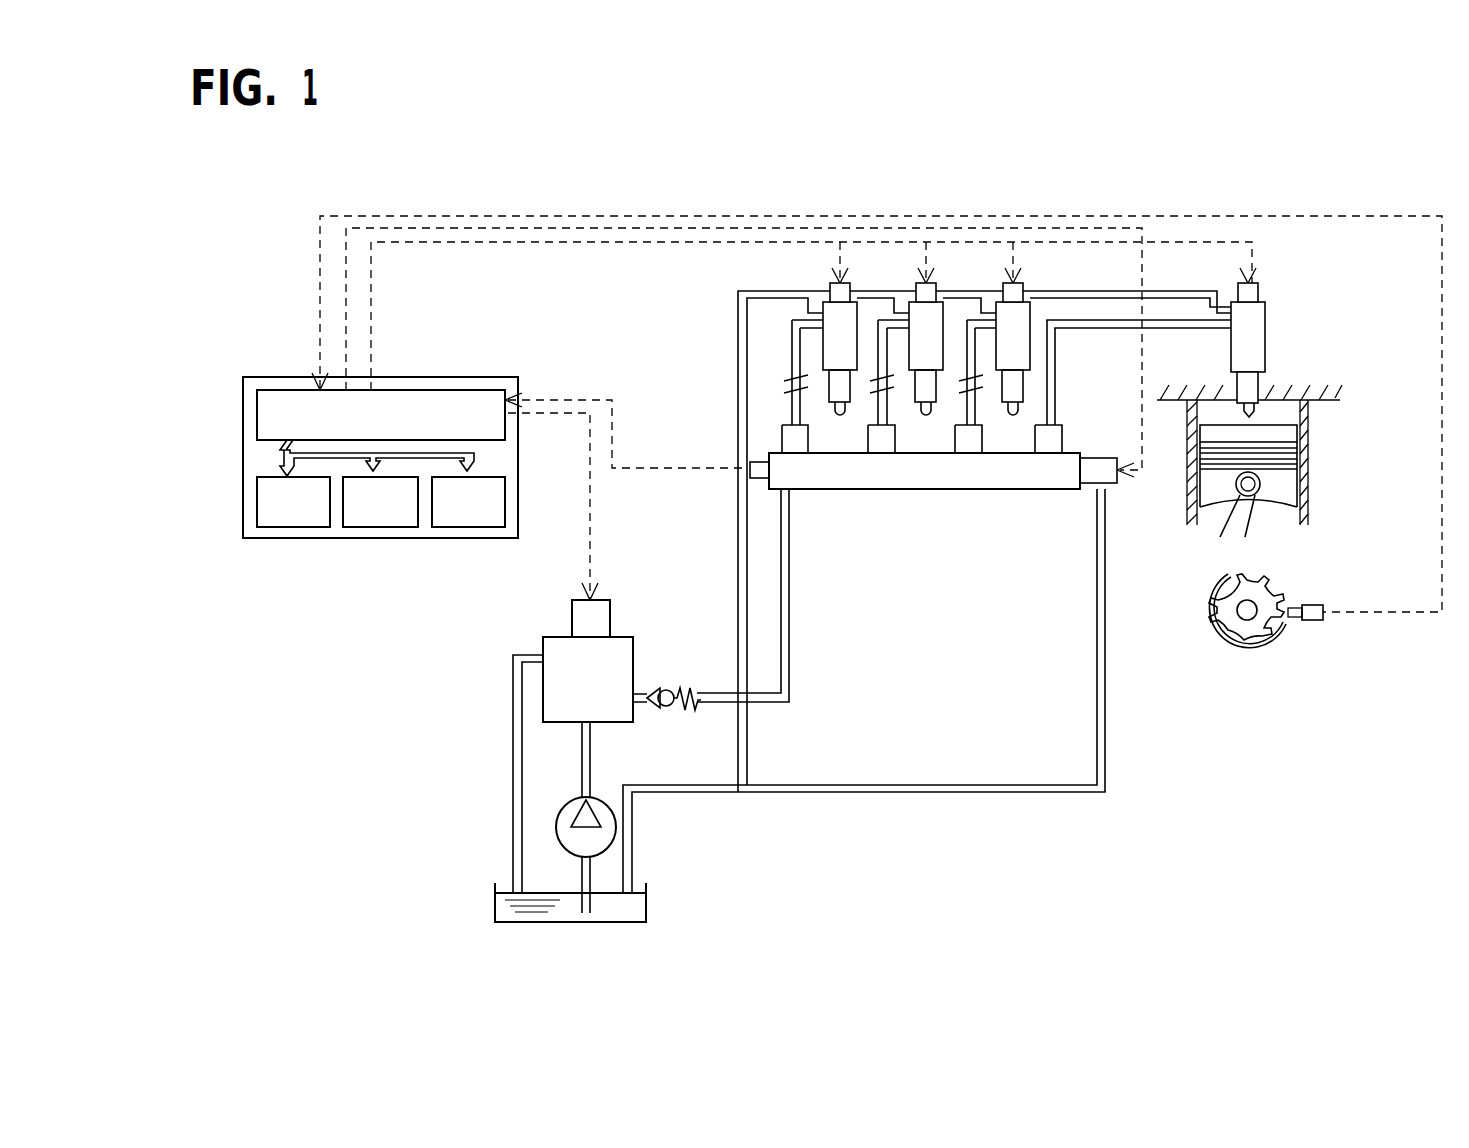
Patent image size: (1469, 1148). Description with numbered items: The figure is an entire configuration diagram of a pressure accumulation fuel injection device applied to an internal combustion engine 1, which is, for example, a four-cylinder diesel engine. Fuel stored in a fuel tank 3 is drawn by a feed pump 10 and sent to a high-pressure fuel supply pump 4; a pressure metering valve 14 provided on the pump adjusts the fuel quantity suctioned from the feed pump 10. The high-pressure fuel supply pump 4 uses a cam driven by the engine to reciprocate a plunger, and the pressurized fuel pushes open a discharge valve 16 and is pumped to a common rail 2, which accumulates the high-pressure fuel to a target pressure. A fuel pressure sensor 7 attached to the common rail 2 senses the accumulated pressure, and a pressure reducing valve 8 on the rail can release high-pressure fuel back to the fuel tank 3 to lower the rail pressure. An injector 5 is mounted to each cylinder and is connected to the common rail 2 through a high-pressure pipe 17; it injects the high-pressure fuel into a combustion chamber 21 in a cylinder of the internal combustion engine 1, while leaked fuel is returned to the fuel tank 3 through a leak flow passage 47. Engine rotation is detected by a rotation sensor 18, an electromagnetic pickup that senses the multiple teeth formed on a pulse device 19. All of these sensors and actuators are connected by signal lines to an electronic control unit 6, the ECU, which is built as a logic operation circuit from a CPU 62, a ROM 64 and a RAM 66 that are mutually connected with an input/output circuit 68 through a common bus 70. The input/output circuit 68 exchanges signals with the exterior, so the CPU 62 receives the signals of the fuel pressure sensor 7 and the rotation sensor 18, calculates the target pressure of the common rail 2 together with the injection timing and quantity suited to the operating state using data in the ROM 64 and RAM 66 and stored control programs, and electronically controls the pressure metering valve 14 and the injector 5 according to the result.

The internal combustion engine 1 is at (1351, 381).
The common rail 2 is at (1005, 490).
The fuel tank 3 is at (647, 903).
The high-pressure fuel supply pump 4 is at (632, 637).
The injector 5 is at (1262, 320).
The electronic control unit 6 is at (243, 389).
The fuel pressure sensor 7 is at (750, 462).
The pressure reducing valve 8 is at (1113, 483).
The feed pump 10 is at (595, 800).
The pressure metering valve 14 is at (612, 600).
The discharge valve 16 is at (671, 690).
The high-pressure pipe 17 is at (1102, 328).
The rotation sensor 18 is at (1312, 605).
The pulse device 19 is at (1243, 622).
The combustion chamber 21 is at (1285, 415).
The leak flow passage 47 is at (738, 352).
The CPU 62 is at (257, 515).
The ROM 64 is at (378, 527).
The RAM 66 is at (470, 522).
The input/output circuit 68 is at (257, 423).
The common bus 70 is at (283, 463).